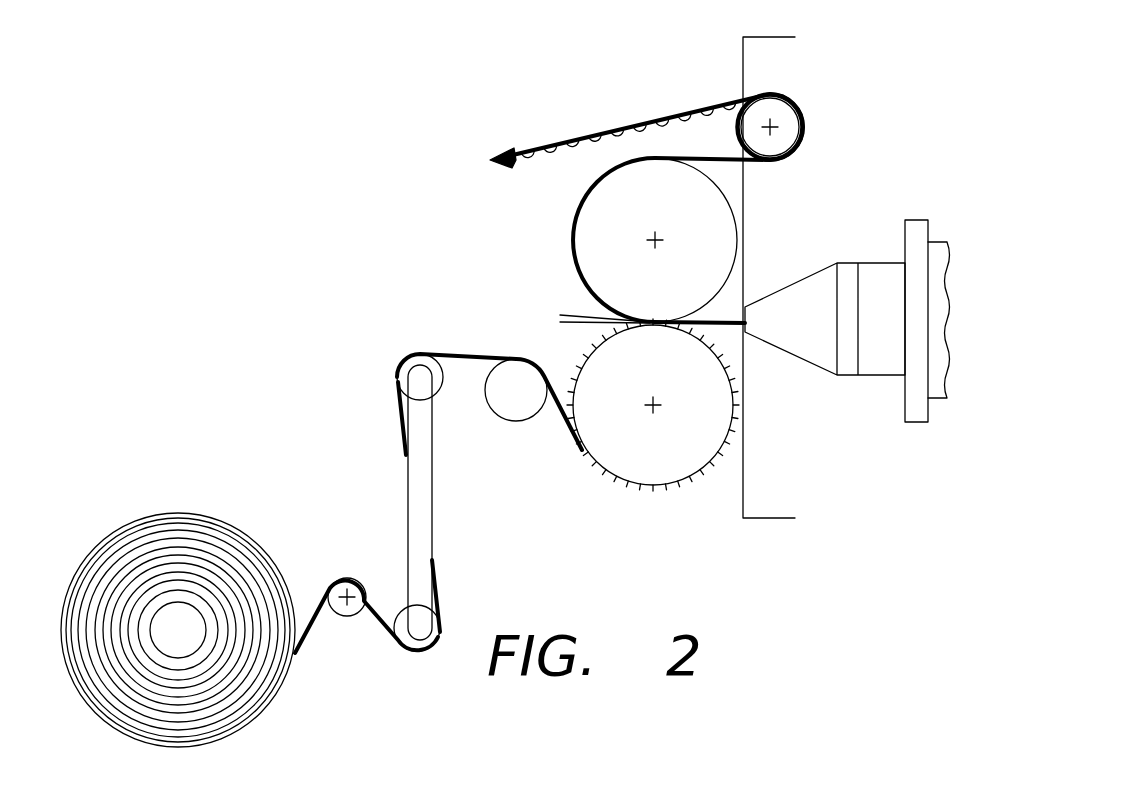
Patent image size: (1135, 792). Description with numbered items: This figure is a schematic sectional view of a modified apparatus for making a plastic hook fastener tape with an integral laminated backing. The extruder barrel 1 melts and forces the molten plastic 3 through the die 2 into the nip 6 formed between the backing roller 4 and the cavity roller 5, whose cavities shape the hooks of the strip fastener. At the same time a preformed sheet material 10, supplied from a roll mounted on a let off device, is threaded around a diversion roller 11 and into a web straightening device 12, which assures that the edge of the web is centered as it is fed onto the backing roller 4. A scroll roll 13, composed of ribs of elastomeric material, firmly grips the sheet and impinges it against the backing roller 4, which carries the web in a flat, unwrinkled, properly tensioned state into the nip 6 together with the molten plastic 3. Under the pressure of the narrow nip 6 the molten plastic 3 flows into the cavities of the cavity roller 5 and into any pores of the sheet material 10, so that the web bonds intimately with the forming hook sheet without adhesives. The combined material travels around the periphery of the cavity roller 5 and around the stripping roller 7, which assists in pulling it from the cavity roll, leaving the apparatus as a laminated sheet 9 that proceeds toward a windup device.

The extruder barrel 1 is at (943, 243).
The die 2 is at (795, 284).
The molten plastic 3 is at (743, 345).
The backing roller 4 is at (665, 458).
The cavity roller 5 is at (667, 294).
The nip 6 is at (650, 322).
The stripping roller 7 is at (795, 128).
The laminated sheet 9 is at (620, 127).
The sheet material 10 is at (169, 520).
The diversion roller 11 is at (337, 613).
The web straightening device 12 is at (398, 488).
The scroll roll 13 is at (530, 401).